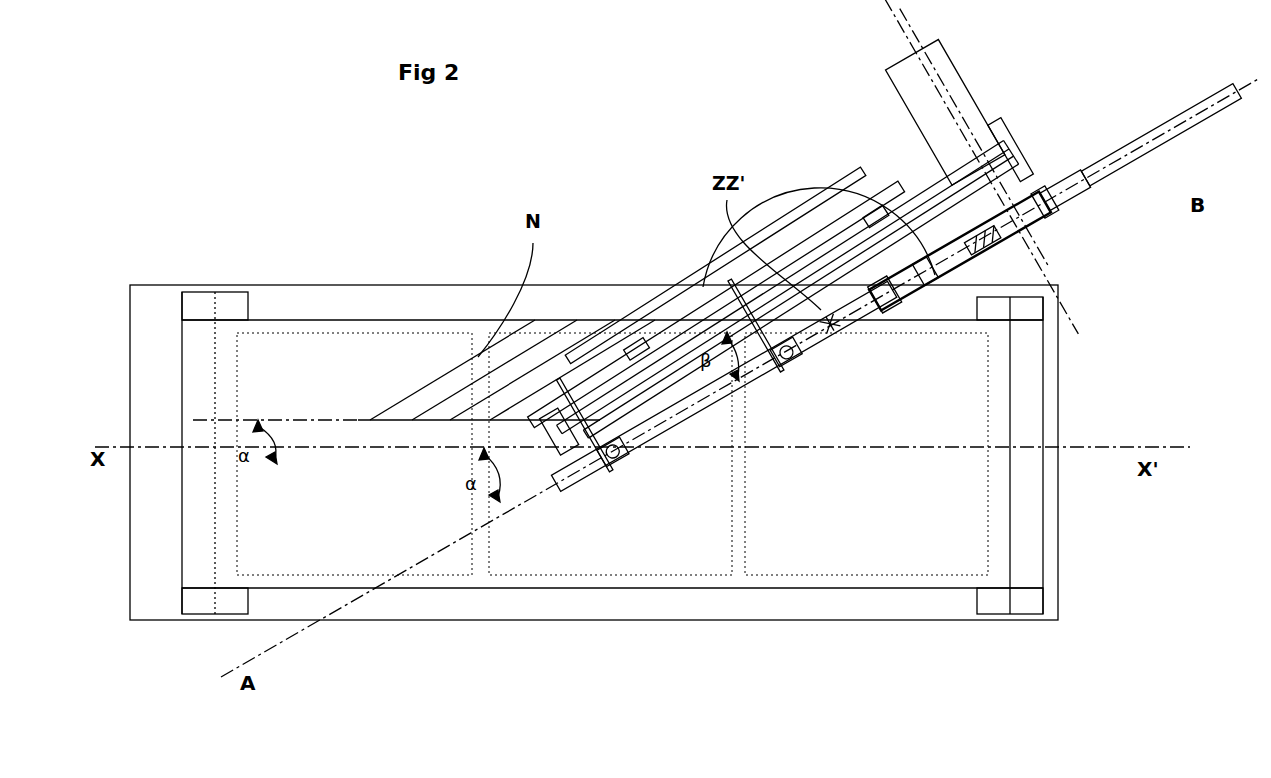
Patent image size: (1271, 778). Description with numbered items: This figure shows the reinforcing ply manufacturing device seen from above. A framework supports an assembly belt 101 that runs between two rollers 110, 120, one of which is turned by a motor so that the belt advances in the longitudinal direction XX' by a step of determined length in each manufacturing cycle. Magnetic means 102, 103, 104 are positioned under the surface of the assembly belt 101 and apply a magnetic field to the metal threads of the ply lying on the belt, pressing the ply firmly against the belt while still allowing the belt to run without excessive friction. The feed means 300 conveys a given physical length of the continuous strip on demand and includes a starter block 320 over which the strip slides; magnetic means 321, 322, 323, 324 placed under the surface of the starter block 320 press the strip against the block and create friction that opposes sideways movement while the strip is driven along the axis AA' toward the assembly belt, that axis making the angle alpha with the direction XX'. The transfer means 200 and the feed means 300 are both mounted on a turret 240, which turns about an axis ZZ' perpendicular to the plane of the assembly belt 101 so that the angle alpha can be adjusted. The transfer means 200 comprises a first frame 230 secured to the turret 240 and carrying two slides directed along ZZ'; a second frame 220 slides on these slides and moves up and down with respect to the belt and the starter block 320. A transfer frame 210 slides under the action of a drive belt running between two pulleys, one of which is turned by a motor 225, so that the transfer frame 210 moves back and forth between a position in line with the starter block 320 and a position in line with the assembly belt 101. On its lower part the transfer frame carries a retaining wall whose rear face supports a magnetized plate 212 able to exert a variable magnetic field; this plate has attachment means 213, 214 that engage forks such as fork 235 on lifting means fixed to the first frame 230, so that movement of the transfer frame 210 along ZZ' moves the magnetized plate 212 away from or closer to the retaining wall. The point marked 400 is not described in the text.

The assembly belt 101 is at (300, 357).
The magnetic means 102 is at (437, 577).
The magnetic means 103 is at (650, 577).
The magnetic means 104 is at (890, 577).
The roller 110 is at (197, 616).
The roller 120 is at (1023, 607).
The transfer means 200 is at (871, 162).
The transfer frame 210 is at (675, 404).
The magnetic means 212 is at (794, 352).
The attachment means 213 is at (614, 460).
The attachment means 214 is at (784, 368).
The second frame 220 is at (1007, 160).
The motor 225 is at (958, 93).
The first frame 230 is at (692, 300).
The fork 235 is at (630, 457).
The turret 240 is at (805, 200).
The feed means 300 is at (1119, 122).
The starter block 320 is at (1012, 248).
The magnetic means 321 is at (884, 291).
The magnetic means 322 is at (928, 277).
The magnetic means 323 is at (986, 247).
The magnetic means 324 is at (1028, 225).
The pivot point 400 is at (873, 314).